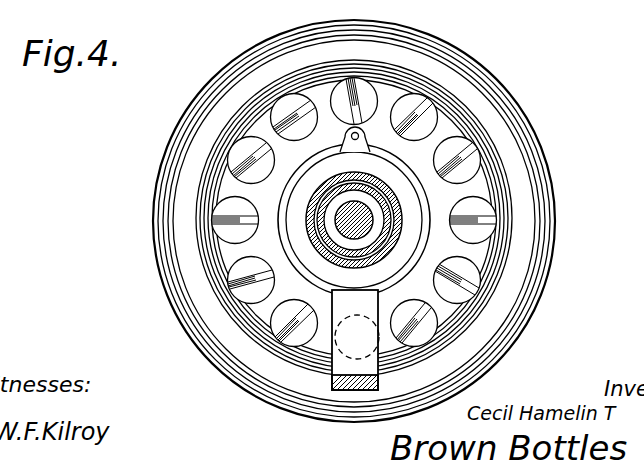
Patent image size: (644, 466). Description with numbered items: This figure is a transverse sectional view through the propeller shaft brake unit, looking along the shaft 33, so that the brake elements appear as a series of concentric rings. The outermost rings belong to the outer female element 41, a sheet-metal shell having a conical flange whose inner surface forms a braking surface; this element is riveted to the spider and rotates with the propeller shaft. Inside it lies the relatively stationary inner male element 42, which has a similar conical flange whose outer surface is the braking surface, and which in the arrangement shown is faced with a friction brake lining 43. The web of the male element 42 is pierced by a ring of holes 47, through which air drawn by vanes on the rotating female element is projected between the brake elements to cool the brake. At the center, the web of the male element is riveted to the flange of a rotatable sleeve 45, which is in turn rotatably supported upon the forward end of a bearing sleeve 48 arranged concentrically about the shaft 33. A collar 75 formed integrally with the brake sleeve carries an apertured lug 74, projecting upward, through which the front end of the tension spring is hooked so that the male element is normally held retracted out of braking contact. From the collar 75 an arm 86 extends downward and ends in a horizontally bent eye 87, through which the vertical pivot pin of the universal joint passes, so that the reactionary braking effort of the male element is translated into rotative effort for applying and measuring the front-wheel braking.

The shaft 33 is at (351, 210).
The outer female element 41 is at (163, 172).
The inner male element 42 is at (172, 193).
The friction brake lining 43 is at (162, 218).
The rotatable sleeve 45 is at (322, 258).
The holes 47 is at (342, 218).
The bearing sleeve 48 is at (384, 246).
The apertured lug 74 is at (357, 126).
The collar 75 is at (405, 188).
The arm 86 is at (342, 360).
The horizontally bent eye 87 is at (353, 388).